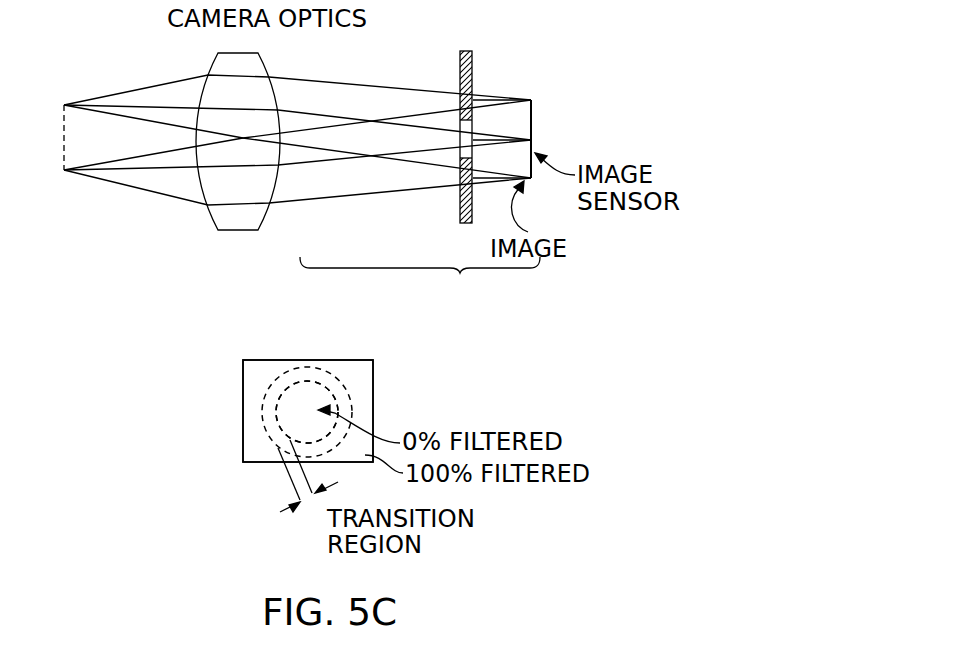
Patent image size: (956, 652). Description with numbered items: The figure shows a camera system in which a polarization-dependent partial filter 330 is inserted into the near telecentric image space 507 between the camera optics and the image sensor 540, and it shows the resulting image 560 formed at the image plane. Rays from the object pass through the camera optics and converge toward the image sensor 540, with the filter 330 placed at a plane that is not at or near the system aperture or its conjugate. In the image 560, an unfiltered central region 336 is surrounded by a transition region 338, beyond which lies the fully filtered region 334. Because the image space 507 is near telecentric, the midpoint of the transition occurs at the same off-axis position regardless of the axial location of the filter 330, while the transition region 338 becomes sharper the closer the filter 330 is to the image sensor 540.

The polarization-dependent partial filter 330 is at (473, 60).
The image sensor 540 is at (534, 120).
The image space 507 is at (420, 280).
The image 560 is at (243, 448).
The 100% filtered region 334 is at (365, 370).
The transition region 338 is at (330, 382).
The 0% filtered region 336 is at (300, 407).